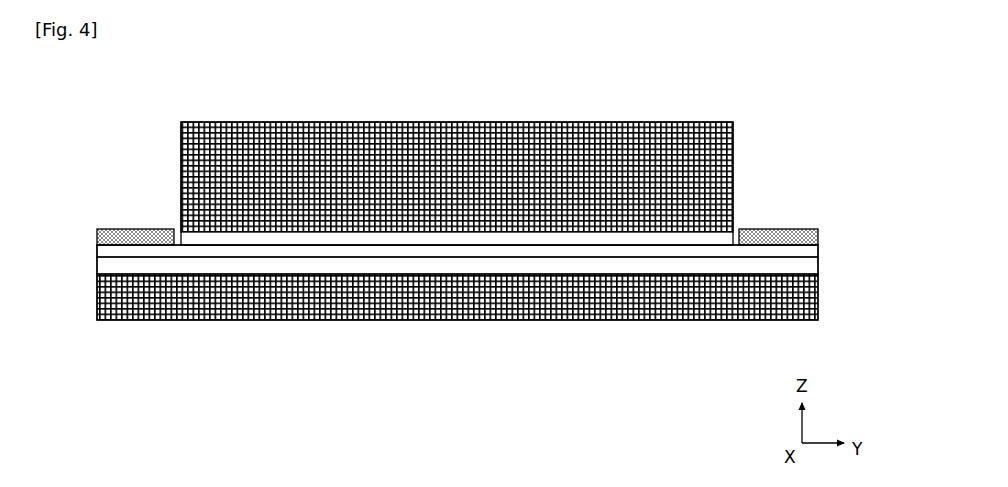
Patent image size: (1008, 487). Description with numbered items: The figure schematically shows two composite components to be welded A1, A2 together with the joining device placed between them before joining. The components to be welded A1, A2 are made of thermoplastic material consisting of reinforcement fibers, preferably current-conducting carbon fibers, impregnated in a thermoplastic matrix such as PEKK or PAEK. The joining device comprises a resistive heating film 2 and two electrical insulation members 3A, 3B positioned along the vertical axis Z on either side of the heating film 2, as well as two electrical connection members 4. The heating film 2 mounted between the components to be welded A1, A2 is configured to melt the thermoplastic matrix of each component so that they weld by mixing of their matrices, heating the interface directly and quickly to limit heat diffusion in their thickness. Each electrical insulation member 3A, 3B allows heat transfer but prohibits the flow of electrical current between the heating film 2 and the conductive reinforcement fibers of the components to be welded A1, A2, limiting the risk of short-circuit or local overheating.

The resistive heating film 2 is at (808, 252).
The electrical insulation member 3A is at (808, 268).
The electrical insulation member 3B is at (725, 238).
The electrical connection member 4 is at (96, 238).
The component to be welded A1 is at (112, 322).
The component to be welded A2 is at (262, 121).